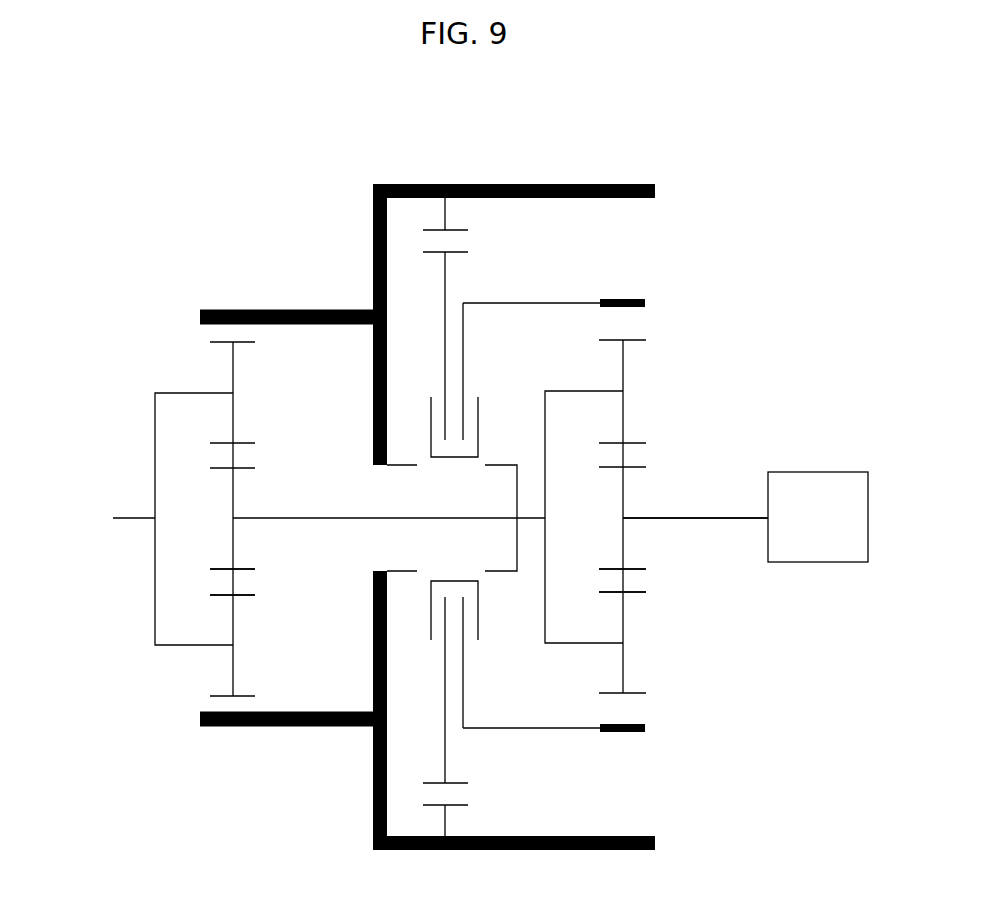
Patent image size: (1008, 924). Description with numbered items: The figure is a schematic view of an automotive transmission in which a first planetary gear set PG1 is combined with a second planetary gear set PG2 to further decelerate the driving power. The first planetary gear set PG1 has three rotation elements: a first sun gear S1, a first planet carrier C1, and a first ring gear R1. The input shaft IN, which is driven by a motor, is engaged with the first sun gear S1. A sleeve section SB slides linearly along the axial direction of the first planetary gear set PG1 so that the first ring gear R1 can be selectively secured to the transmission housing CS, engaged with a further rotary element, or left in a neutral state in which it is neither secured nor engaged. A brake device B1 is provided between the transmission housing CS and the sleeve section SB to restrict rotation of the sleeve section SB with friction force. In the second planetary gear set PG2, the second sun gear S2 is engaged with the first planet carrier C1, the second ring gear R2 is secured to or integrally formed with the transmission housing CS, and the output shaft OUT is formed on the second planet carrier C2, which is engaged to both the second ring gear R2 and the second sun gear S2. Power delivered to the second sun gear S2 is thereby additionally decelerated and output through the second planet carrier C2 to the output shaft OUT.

The transmission housing CS is at (606, 183).
The first planetary gear set PG1 is at (662, 295).
The second planetary gear set PG2 is at (140, 663).
The first ring gear R1 is at (645, 728).
The second ring gear R2 is at (210, 325).
The first planet carrier C1 is at (583, 643).
The second planet carrier C2 is at (193, 392).
The first sun gear S1 is at (643, 569).
The second sun gear S2 is at (218, 568).
The sleeve section SB is at (448, 458).
The brake device B1 is at (478, 793).
The input shaft IN is at (716, 517).
The output shaft OUT is at (325, 519).